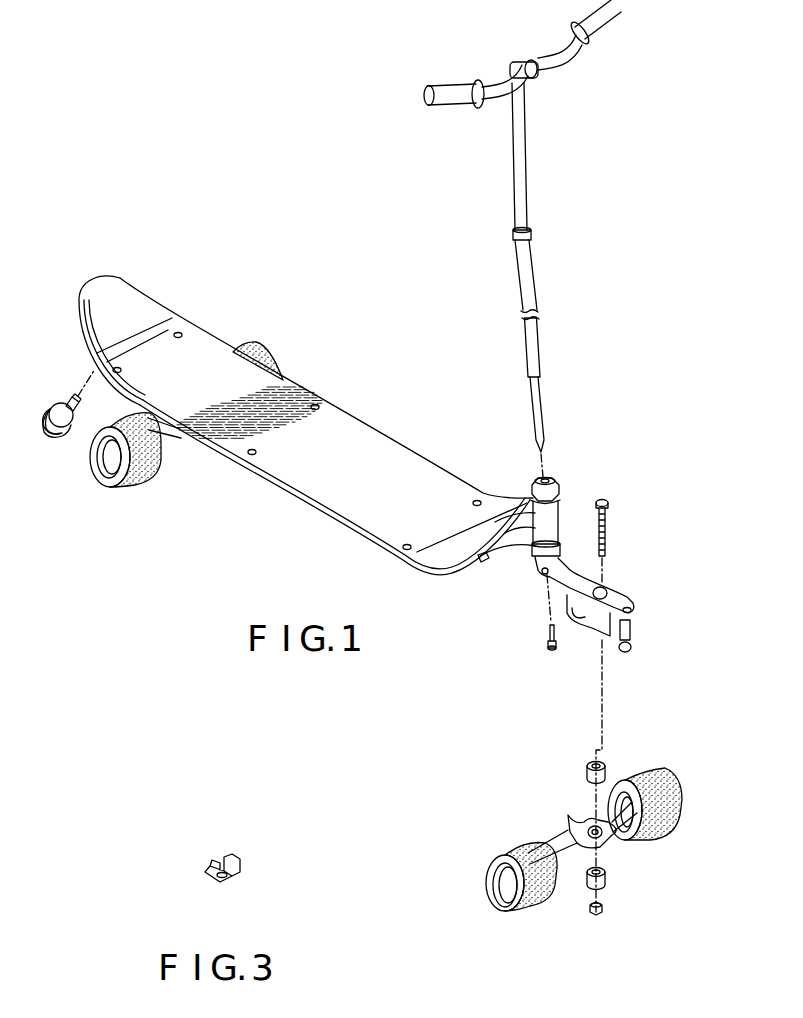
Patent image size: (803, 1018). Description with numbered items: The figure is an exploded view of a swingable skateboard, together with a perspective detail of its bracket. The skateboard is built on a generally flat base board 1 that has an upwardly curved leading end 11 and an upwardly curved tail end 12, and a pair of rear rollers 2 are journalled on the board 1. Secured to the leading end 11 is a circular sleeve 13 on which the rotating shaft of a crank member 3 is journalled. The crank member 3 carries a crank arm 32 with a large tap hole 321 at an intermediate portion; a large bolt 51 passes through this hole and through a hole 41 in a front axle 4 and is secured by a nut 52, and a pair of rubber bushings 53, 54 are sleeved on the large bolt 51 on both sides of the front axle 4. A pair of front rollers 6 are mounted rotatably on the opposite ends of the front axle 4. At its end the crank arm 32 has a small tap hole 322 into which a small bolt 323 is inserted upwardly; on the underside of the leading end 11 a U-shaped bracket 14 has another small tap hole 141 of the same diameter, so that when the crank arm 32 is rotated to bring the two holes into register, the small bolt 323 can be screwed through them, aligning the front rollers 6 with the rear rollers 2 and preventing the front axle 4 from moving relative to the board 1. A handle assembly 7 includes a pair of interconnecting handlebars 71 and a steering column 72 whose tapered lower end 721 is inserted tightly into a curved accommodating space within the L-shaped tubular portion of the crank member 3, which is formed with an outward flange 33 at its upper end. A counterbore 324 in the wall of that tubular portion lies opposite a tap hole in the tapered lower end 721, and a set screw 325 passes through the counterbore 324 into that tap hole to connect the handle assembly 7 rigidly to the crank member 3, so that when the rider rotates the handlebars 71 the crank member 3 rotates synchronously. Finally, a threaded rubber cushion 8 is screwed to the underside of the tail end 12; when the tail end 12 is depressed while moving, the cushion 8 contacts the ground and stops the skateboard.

In FIG. 1, the base board 1 is at (380, 566).
In FIG. 1, the rear rollers 2 is at (252, 345).
In FIG. 1, the crank member 3 is at (594, 553).
In FIG. 1, the front axle 4 is at (590, 865).
In FIG. 1, the front rollers 6 is at (660, 785).
In FIG. 1, the handle assembly 7 is at (522, 238).
In FIG. 1, the threaded rubber cushion 8 is at (50, 438).
In FIG. 1, the leading end 11 is at (513, 550).
In FIG. 1, the tail end 12 is at (123, 292).
In FIG. 1, the circular sleeve 13 is at (556, 477).
In FIG. 1, the U-shaped bracket 14 is at (484, 563).
In FIG. 3, the U-shaped bracket 14 is at (240, 877).
In FIG. 1, the crank arm 32 is at (605, 599).
In FIG. 1, the outward flange 33 is at (532, 470).
In FIG. 1, the hole 41 is at (602, 843).
In FIG. 1, the large bolt 51 is at (608, 521).
In FIG. 1, the nut 52 is at (603, 909).
In FIG. 1, the rubber bushing 53 is at (612, 768).
In FIG. 1, the rubber bushing 54 is at (605, 885).
In FIG. 1, the handlebars 71 is at (495, 88).
In FIG. 1, the steering column 72 is at (537, 277).
In FIG. 3, the small tap hole 141 is at (222, 878).
In FIG. 1, the large tap hole 321 is at (609, 590).
In FIG. 1, the small tap hole 322 is at (631, 609).
In FIG. 1, the small bolt 323 is at (632, 647).
In FIG. 1, the counterbore 324 is at (544, 576).
In FIG. 1, the set screw 325 is at (548, 645).
In FIG. 1, the tapered lower end 721 is at (532, 440).